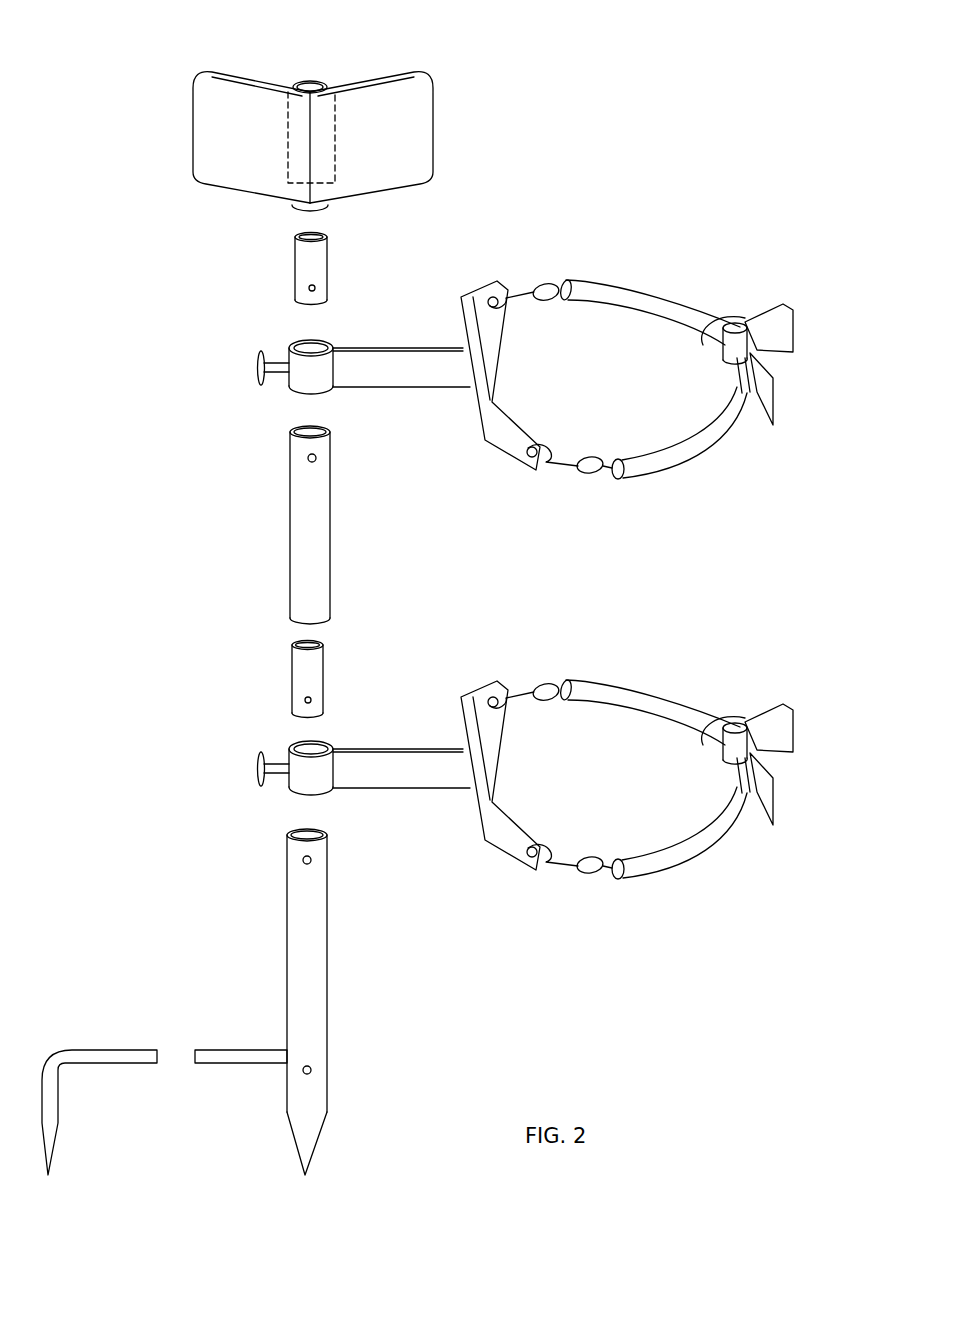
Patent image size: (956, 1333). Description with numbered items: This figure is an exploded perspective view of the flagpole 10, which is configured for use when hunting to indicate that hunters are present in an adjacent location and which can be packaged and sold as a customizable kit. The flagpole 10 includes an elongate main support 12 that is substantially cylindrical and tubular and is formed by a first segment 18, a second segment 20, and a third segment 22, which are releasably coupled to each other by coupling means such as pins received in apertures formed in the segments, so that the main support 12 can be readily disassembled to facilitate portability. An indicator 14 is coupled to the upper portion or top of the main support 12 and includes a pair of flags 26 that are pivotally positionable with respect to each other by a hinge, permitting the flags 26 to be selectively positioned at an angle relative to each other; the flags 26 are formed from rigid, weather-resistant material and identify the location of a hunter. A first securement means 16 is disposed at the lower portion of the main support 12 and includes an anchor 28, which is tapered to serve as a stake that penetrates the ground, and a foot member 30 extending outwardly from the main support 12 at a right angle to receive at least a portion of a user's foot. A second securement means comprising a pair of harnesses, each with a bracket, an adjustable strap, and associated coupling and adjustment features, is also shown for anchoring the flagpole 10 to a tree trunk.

The flagpole 10 is at (613, 54).
The main support 12 is at (276, 525).
The indicator 14 is at (277, 117).
The first securement means 16 is at (228, 1003).
The first segment 18 is at (292, 545).
The second segment 20 is at (276, 525).
The third segment 22 is at (302, 80).
The flags 26 is at (254, 157).
The anchor 28 is at (307, 1130).
The foot member 30 is at (245, 1050).